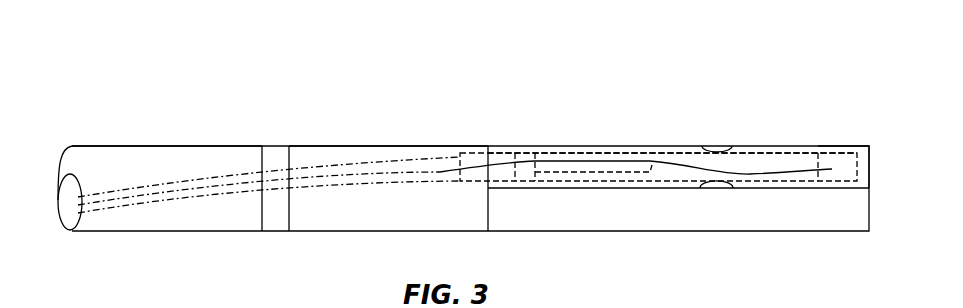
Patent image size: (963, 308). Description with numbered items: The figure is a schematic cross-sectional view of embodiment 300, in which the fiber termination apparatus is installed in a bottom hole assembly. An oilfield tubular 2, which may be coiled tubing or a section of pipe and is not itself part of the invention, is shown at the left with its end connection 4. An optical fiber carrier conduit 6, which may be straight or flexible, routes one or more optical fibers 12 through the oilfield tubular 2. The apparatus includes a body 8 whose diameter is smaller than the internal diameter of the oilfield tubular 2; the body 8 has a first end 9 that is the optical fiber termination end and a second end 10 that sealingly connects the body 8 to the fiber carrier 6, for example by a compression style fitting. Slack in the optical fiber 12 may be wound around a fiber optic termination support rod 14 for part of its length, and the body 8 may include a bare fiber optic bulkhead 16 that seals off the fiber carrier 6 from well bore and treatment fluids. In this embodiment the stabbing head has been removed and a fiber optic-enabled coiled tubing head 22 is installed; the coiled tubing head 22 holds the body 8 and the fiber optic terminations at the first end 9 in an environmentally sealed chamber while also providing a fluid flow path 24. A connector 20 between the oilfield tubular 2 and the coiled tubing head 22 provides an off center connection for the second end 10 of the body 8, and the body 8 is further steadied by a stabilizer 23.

The embodiment 300 is at (764, 36).
The oilfield tubular 2 is at (187, 146).
The end connection 4 is at (277, 146).
The optical fiber carrier conduit 6 is at (100, 198).
The body 8 is at (622, 153).
The first end 9 is at (838, 153).
The second end 10 is at (472, 153).
The optical fiber 12 is at (124, 196).
The fiber optic termination support rod 14 is at (580, 165).
The bare fiber optic bulkhead 16 is at (524, 153).
The connector 20 is at (358, 146).
The fiber optic-enabled coiled tubing head 22 is at (800, 146).
The stabilizer 23 is at (716, 150).
The fluid flow path 24 is at (692, 224).